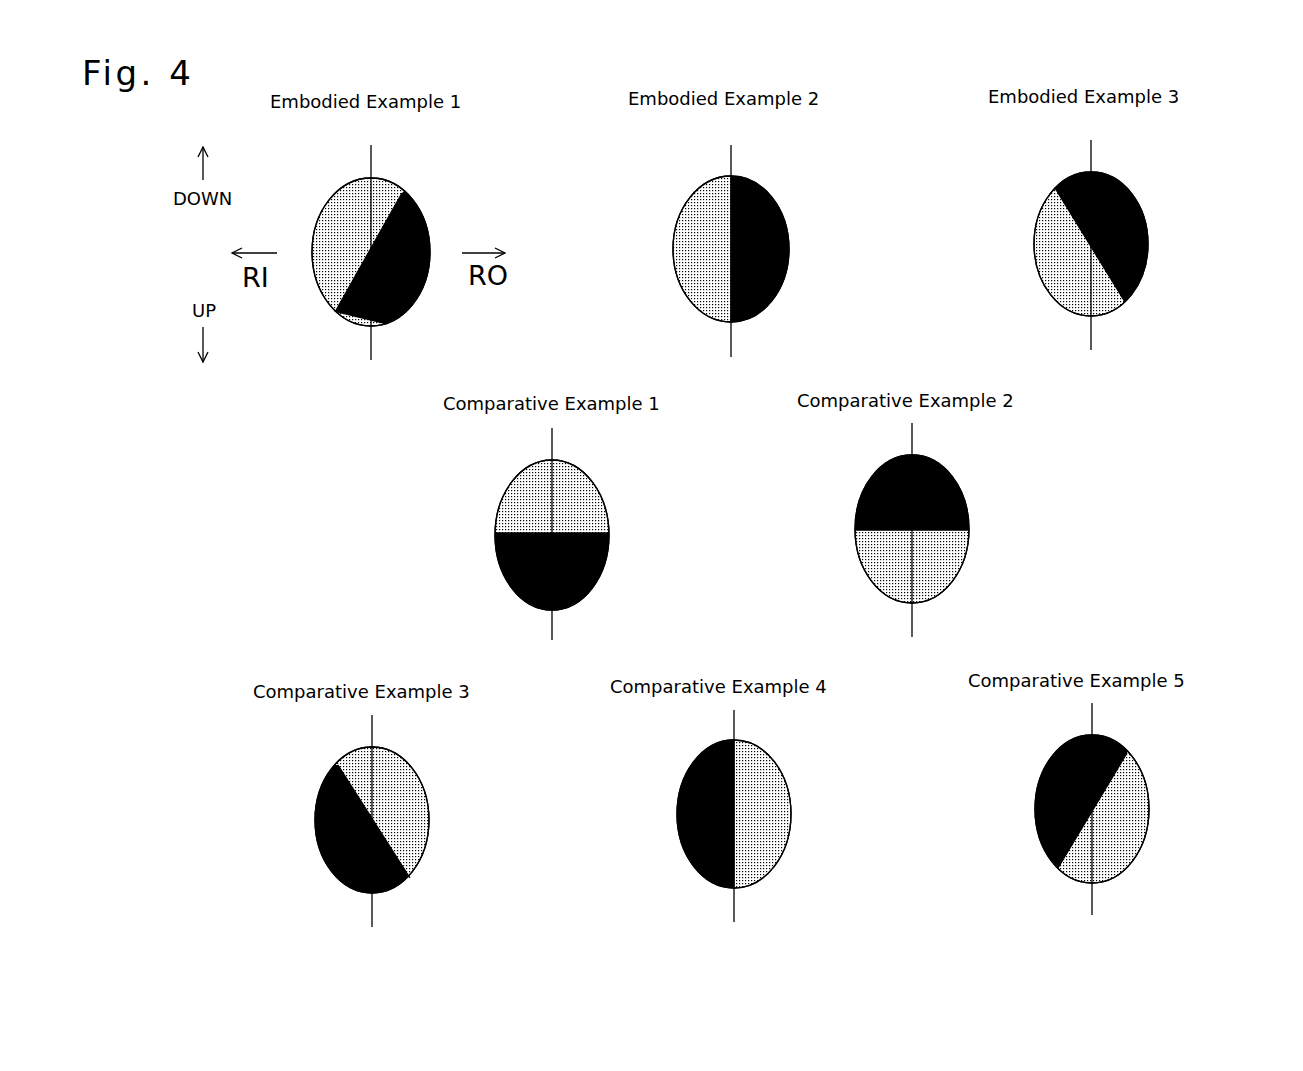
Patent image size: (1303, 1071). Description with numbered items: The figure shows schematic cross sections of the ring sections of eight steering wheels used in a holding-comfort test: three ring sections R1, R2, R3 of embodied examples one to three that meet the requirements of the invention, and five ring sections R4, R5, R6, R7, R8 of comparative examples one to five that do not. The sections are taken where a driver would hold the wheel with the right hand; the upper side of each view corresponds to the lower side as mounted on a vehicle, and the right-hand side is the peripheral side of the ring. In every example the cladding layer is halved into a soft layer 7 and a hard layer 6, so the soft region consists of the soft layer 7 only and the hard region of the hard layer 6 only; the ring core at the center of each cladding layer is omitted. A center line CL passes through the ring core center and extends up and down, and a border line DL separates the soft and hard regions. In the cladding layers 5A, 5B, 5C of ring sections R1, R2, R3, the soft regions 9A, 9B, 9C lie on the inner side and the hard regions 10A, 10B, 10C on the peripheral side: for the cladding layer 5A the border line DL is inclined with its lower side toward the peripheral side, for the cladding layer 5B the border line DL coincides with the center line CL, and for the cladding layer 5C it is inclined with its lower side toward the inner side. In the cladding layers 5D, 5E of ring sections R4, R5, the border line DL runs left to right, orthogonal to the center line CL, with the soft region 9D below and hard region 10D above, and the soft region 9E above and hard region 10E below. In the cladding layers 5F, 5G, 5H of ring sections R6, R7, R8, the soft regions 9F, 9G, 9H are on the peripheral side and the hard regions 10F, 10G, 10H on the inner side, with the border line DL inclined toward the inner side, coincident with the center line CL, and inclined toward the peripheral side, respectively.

The cladding layer 5A is at (307, 220).
The hard layer 6 is at (440, 245).
The hard region 10A is at (407, 323).
The soft layer 7 is at (350, 274).
The soft region 9A is at (320, 292).
The ring section R1 is at (428, 193).
The cladding layer 5B is at (668, 217).
The soft region 9B is at (680, 265).
The hard region 10B is at (787, 268).
The ring section R2 is at (788, 190).
The cladding layer 5C is at (1030, 262).
The soft region 9C is at (1055, 305).
The hard region 10C is at (1147, 260).
The ring section R3 is at (1148, 187).
The cladding layer 5D is at (490, 565).
The soft region 9D is at (508, 495).
The hard region 10D is at (593, 588).
The ring section R4 is at (610, 475).
The cladding layer 5E is at (970, 558).
The soft region 9E is at (880, 583).
The hard region 10E is at (863, 490).
The ring section R5 is at (970, 470).
The cladding layer 5F is at (423, 875).
The soft region 9F is at (422, 813).
The hard region 10F is at (320, 855).
The ring section R6 is at (432, 760).
The cladding layer 5G is at (670, 805).
The soft region 9G is at (787, 813).
The hard region 10G is at (678, 828).
The ring section R7 is at (792, 760).
The cladding layer 5H is at (1150, 833).
The soft region 9H is at (1133, 862).
The hard region 10H is at (1035, 823).
The ring section R8 is at (1150, 750).
The border line DL is at (391, 212).
The center line CL is at (372, 343).